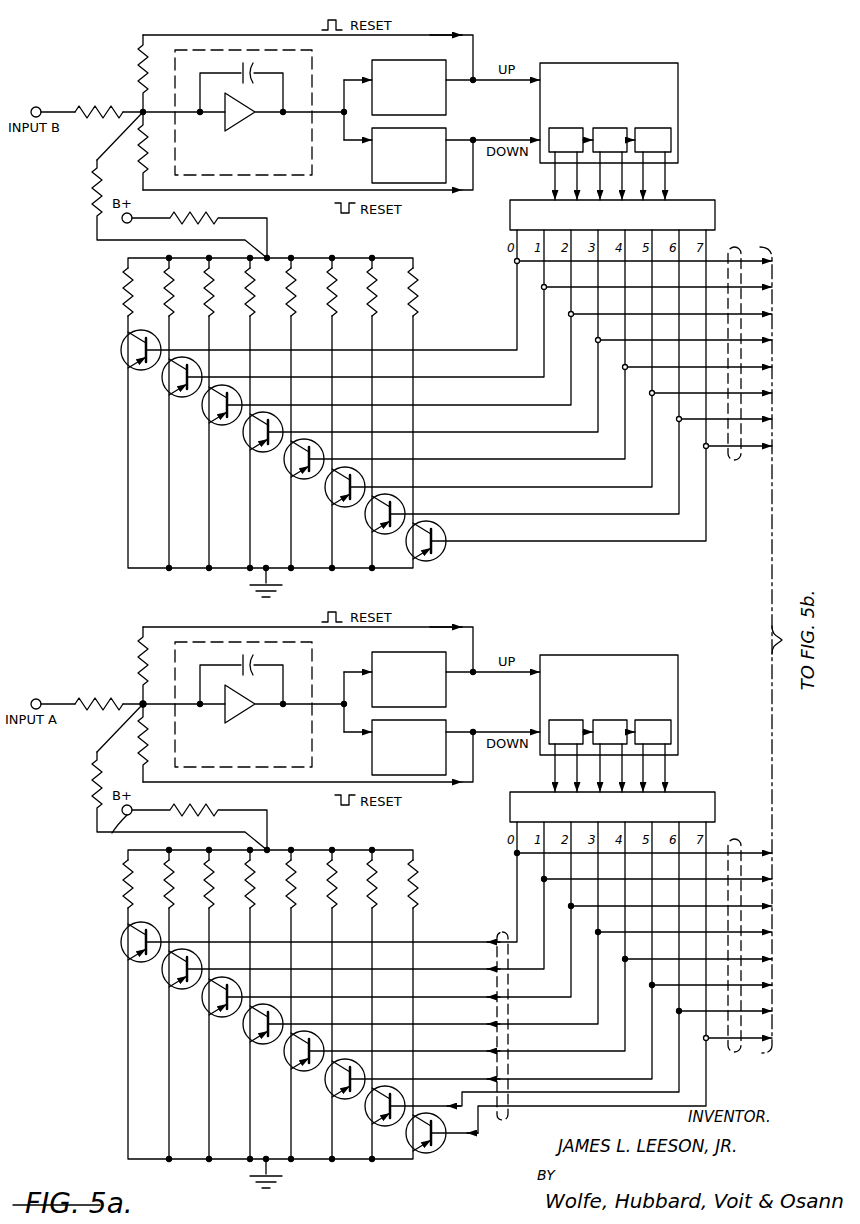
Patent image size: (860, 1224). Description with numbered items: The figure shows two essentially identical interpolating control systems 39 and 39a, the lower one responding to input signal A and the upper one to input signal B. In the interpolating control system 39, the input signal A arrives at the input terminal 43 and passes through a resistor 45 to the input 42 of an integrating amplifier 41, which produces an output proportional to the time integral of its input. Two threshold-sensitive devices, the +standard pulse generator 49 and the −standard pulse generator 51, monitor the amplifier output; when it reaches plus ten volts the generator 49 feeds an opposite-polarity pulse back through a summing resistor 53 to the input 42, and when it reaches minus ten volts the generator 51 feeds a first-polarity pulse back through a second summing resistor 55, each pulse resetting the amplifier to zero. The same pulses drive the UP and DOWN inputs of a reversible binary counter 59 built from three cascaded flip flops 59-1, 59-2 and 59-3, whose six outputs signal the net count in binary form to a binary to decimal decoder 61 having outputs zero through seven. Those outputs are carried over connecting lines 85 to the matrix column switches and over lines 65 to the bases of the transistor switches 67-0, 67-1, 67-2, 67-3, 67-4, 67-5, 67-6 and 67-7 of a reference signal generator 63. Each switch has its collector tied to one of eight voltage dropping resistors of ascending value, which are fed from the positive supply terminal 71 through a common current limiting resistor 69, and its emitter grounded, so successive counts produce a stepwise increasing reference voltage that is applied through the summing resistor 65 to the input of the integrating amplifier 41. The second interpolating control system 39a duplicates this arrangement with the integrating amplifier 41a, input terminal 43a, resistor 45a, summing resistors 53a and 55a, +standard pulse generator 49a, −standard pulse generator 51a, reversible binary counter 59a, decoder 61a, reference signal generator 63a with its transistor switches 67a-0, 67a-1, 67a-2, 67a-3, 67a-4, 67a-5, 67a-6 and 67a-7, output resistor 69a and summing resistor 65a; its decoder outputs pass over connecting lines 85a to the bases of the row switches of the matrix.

The integrating amplifier 41a is at (217, 50).
The input terminal 43a is at (36, 106).
The resistor 45a is at (100, 106).
The summing resistor 53a is at (140, 73).
The second summing resistor 55a is at (136, 147).
The summing resistor 65a is at (95, 197).
The output resistor 69a is at (206, 222).
The +standard pulse generator 49a is at (392, 60).
The −standard pulse generator 51a is at (446, 132).
The reversible binary counter 59a is at (588, 63).
The binary to decimal decoder 61a is at (692, 202).
The connecting lines 85a is at (735, 247).
The interpolating control system 39a is at (291, 288).
The reference signal generator 63a is at (118, 428).
The transistor switch 67a-0 is at (124, 366).
The transistor switch 67a-1 is at (172, 400).
The transistor switch 67a-2 is at (214, 428).
The transistor switch 67a-3 is at (254, 456).
The transistor switch 67a-4 is at (294, 484).
The transistor switch 67a-5 is at (336, 511).
The transistor switch 67a-6 is at (378, 538).
The transistor switch 67a-7 is at (437, 556).
The integrating amplifier 41 is at (234, 642).
The input of the integrating amplifier 42 is at (142, 702).
The input terminal 43 is at (36, 698).
The resistor 45 is at (96, 698).
The summing resistor 53 is at (143, 660).
The second summing resistor 55 is at (142, 740).
The summing resistor and lines 65 is at (94, 775).
The current limiting resistor 69 is at (206, 814).
The B+ terminal 71 is at (114, 832).
The +standard pulse generator 49 is at (446, 688).
The −standard pulse generator 51 is at (446, 732).
The reversible binary counter 59 is at (616, 708).
The flip flop 59-1 is at (549, 720).
The flip flop 59-2 is at (626, 720).
The flip flop 59-3 is at (671, 736).
The binary to decimal decoder 61 is at (696, 794).
The connecting lines 85 is at (737, 834).
The interpolating control system 39 is at (288, 879).
The reference signal generator 63 is at (116, 1036).
The transistor switch 67-0 is at (122, 955).
The transistor switch 67-1 is at (174, 984).
The transistor switch 67-2 is at (216, 1014).
The transistor switch 67-3 is at (256, 1042).
The transistor switch 67-4 is at (296, 1070).
The transistor switch 67-5 is at (338, 1098).
The transistor switch 67-6 is at (378, 1122).
The transistor switch 67-7 is at (432, 1148).